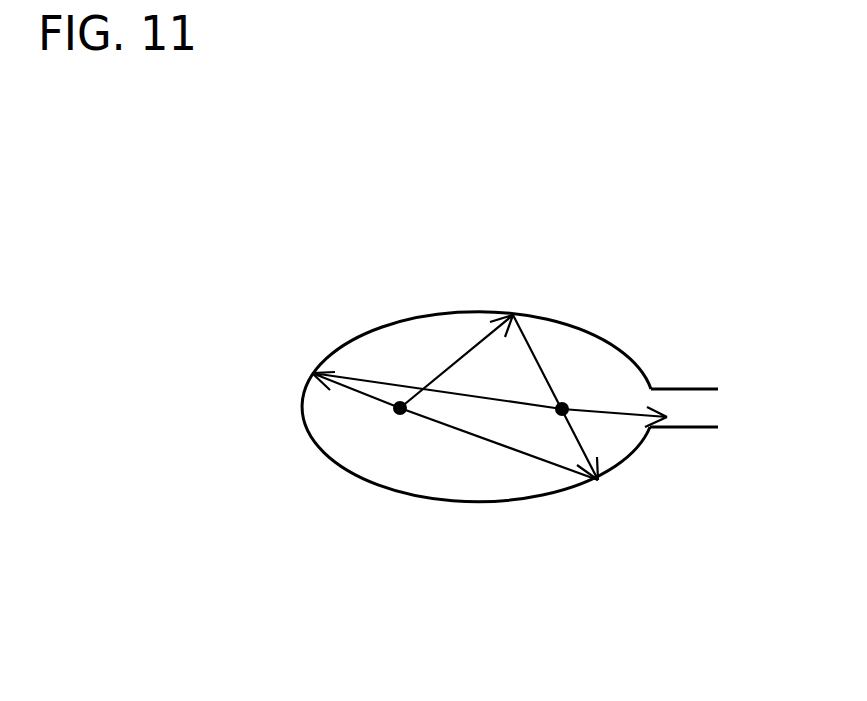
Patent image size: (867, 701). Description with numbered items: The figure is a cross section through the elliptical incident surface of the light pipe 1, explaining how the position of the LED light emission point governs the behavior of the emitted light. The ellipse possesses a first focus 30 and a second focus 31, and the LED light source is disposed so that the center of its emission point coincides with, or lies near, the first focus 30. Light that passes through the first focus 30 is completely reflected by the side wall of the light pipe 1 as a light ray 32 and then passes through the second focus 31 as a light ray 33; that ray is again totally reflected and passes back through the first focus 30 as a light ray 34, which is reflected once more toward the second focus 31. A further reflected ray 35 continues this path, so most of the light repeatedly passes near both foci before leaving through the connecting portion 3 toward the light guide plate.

The light pipe 1 is at (335, 462).
The connecting portion 3 is at (702, 415).
The first focus 30 is at (400, 412).
The second focus 31 is at (565, 404).
The light ray 32 is at (461, 356).
The light ray 33 is at (527, 335).
The light ray 34 is at (497, 433).
The reflected light ray to reflector rear 35 is at (372, 378).